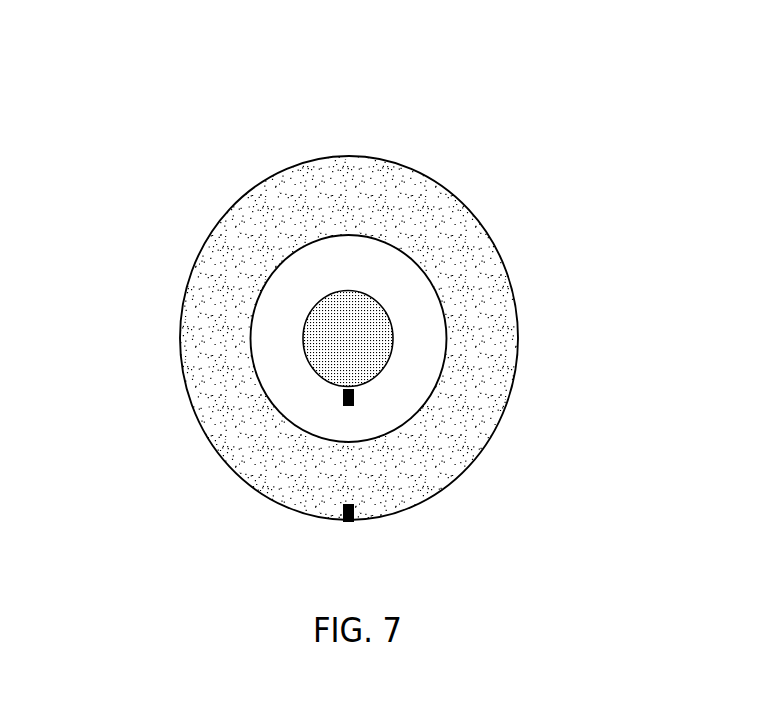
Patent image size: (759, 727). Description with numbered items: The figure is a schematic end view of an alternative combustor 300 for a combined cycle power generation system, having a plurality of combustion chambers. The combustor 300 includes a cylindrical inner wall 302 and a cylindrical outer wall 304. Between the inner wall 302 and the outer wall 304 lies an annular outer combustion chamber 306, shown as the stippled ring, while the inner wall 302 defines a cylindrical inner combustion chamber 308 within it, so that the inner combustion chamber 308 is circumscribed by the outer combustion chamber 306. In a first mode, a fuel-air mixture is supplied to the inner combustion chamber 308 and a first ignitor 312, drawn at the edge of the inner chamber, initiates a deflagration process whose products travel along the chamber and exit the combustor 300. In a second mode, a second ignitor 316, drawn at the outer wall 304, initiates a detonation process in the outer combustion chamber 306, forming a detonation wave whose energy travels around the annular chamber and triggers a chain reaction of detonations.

The combustor 300 is at (589, 71).
The inner wall 302 is at (388, 245).
The outer wall 304 is at (517, 295).
The outer combustion chamber 306 is at (192, 338).
The inner combustion chamber 308 is at (391, 347).
The first ignitor 312 is at (355, 398).
The second ignitor 316 is at (355, 511).